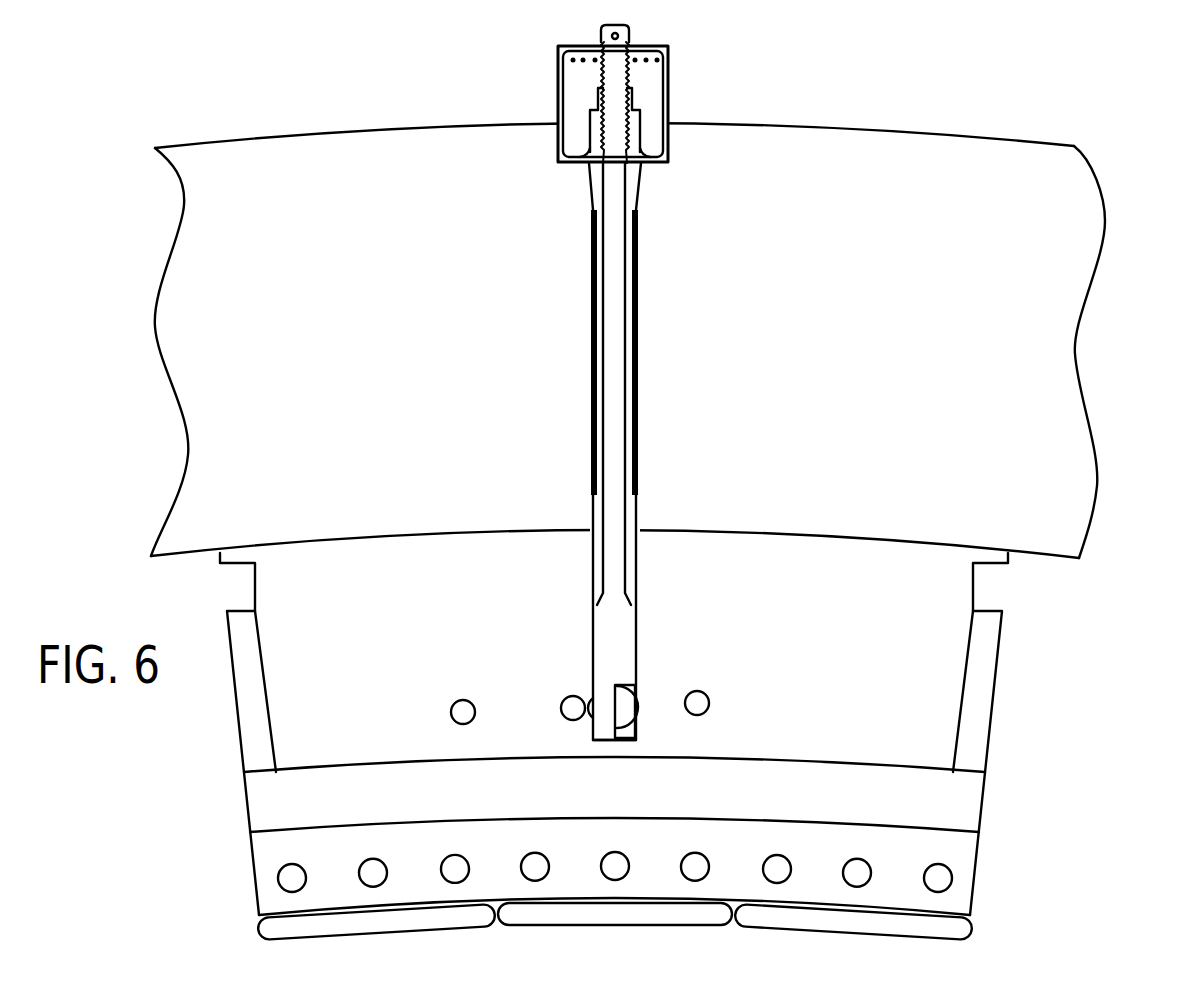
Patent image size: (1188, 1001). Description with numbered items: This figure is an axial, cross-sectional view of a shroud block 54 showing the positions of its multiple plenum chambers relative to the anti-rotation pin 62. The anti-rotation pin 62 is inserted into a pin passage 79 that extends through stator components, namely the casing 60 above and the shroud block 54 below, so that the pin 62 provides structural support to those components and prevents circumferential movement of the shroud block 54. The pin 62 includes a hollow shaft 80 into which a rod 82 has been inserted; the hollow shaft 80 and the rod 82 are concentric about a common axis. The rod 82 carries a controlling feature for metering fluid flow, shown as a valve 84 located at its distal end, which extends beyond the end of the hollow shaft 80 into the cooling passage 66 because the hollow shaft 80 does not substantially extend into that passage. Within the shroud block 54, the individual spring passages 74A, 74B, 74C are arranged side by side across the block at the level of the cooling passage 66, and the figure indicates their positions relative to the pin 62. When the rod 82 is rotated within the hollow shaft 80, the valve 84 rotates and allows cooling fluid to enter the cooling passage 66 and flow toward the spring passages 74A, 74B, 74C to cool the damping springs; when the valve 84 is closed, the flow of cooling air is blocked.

The shroud block 54 is at (995, 690).
The casing 60 is at (1088, 405).
The anti-rotation pin 62 is at (540, 100).
The cooling passage 66 is at (640, 700).
The spring passage 74A is at (452, 706).
The spring passage 74B is at (566, 701).
The spring passage 74C is at (710, 700).
The pin passage 79 is at (590, 325).
The hollow shaft 80 is at (598, 407).
The rod 82 is at (613, 628).
The valve 84 is at (603, 735).